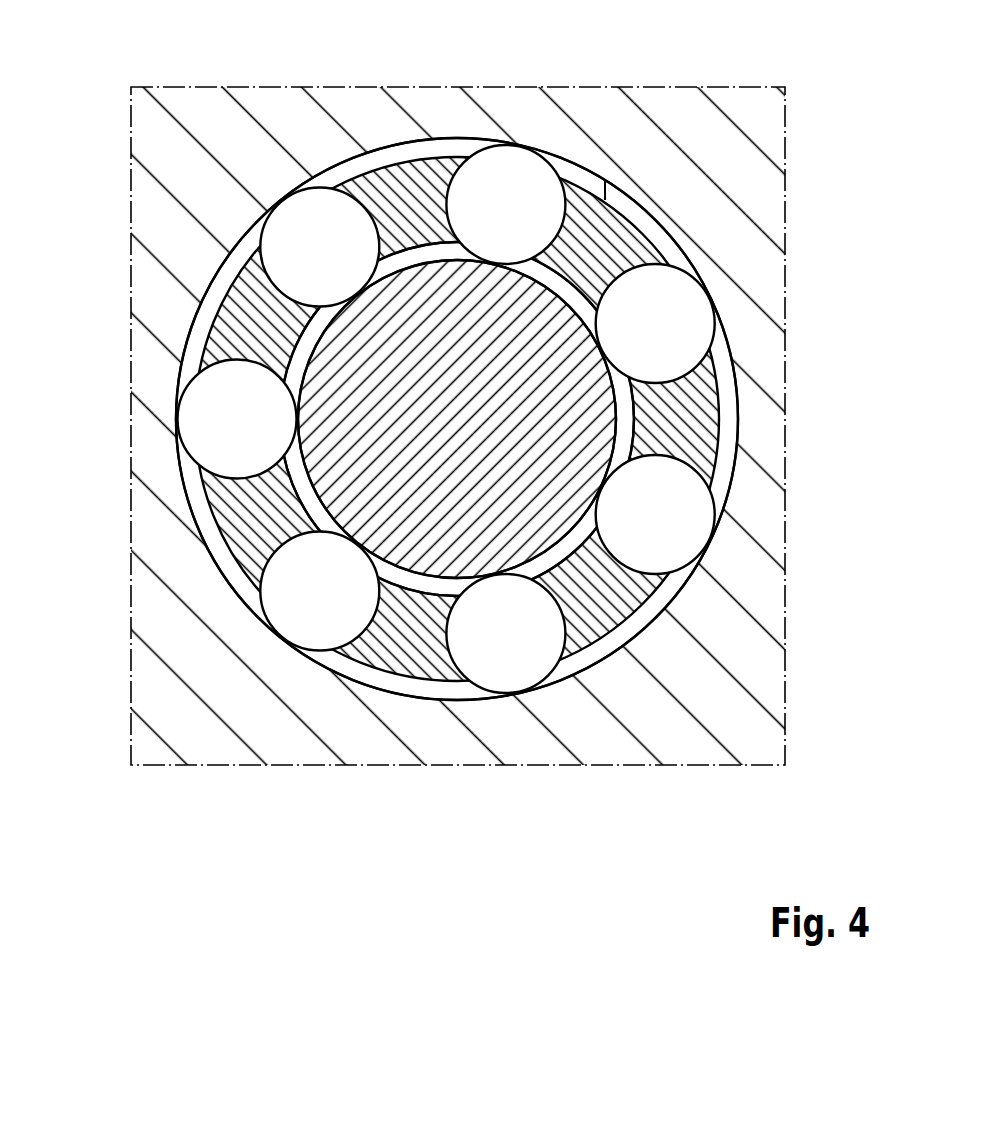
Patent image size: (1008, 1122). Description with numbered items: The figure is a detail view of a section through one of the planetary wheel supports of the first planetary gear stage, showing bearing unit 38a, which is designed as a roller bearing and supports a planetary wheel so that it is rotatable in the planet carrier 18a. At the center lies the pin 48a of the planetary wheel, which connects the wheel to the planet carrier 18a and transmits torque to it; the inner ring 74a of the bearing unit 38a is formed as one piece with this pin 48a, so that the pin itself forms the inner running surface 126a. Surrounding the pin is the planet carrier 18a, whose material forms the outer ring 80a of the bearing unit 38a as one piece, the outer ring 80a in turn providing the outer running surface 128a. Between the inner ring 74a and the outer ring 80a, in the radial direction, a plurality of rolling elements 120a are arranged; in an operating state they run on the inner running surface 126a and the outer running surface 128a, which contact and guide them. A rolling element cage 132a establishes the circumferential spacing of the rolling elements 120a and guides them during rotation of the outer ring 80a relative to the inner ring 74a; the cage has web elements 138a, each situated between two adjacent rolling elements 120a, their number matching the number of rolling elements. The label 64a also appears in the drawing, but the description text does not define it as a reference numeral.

The planet carrier 18a is at (187, 92).
The outer ring 80a is at (393, 428).
The inner running surface 126a is at (323, 172).
The web elements 138a is at (410, 263).
The rolling elements 120a is at (502, 167).
The outer running surface 128a is at (600, 187).
The inner ring 74a is at (310, 347).
The bearing unit 38a is at (750, 569).
The rolling element cage 132a is at (407, 678).
The pin 48a is at (549, 517).
The eccentric element 64a is at (549, 517).